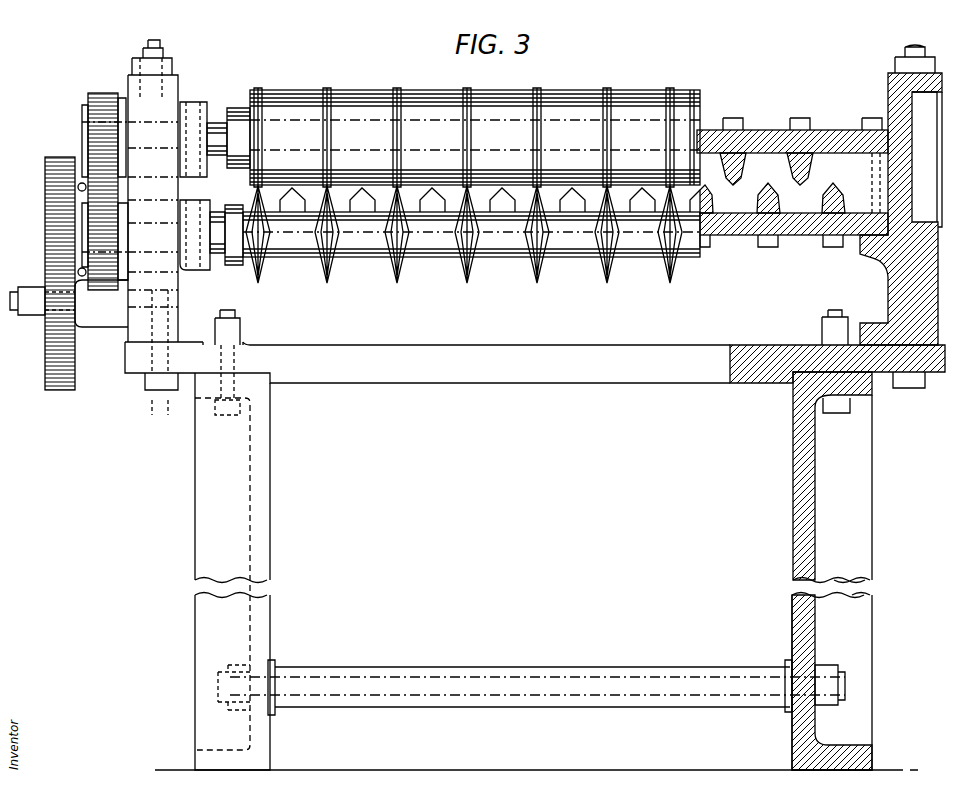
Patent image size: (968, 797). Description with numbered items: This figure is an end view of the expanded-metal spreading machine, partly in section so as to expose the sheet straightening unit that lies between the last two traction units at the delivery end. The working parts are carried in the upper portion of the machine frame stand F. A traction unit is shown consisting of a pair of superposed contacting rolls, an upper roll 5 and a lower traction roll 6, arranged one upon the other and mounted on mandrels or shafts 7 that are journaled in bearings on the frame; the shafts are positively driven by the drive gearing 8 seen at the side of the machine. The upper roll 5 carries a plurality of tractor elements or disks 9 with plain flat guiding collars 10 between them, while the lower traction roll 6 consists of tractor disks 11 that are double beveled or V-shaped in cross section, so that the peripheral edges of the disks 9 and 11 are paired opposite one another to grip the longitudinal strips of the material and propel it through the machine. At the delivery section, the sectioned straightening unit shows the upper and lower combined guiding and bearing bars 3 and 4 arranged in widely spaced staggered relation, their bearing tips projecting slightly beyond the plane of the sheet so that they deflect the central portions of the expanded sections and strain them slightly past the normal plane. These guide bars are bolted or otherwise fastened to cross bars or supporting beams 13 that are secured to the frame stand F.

The upper guide bar 3 is at (790, 164).
The lower guide bar 4 is at (749, 192).
The upper roll 5 is at (241, 107).
The lower traction roll 6 is at (608, 268).
The shaft 7 is at (218, 136).
The drive gearing 8 is at (87, 121).
The tractor disk 9 is at (261, 92).
The guiding collar 10 is at (475, 131).
The tractor disk 11 is at (268, 268).
The supporting beam 13 is at (765, 130).
The frame stand F is at (535, 407).